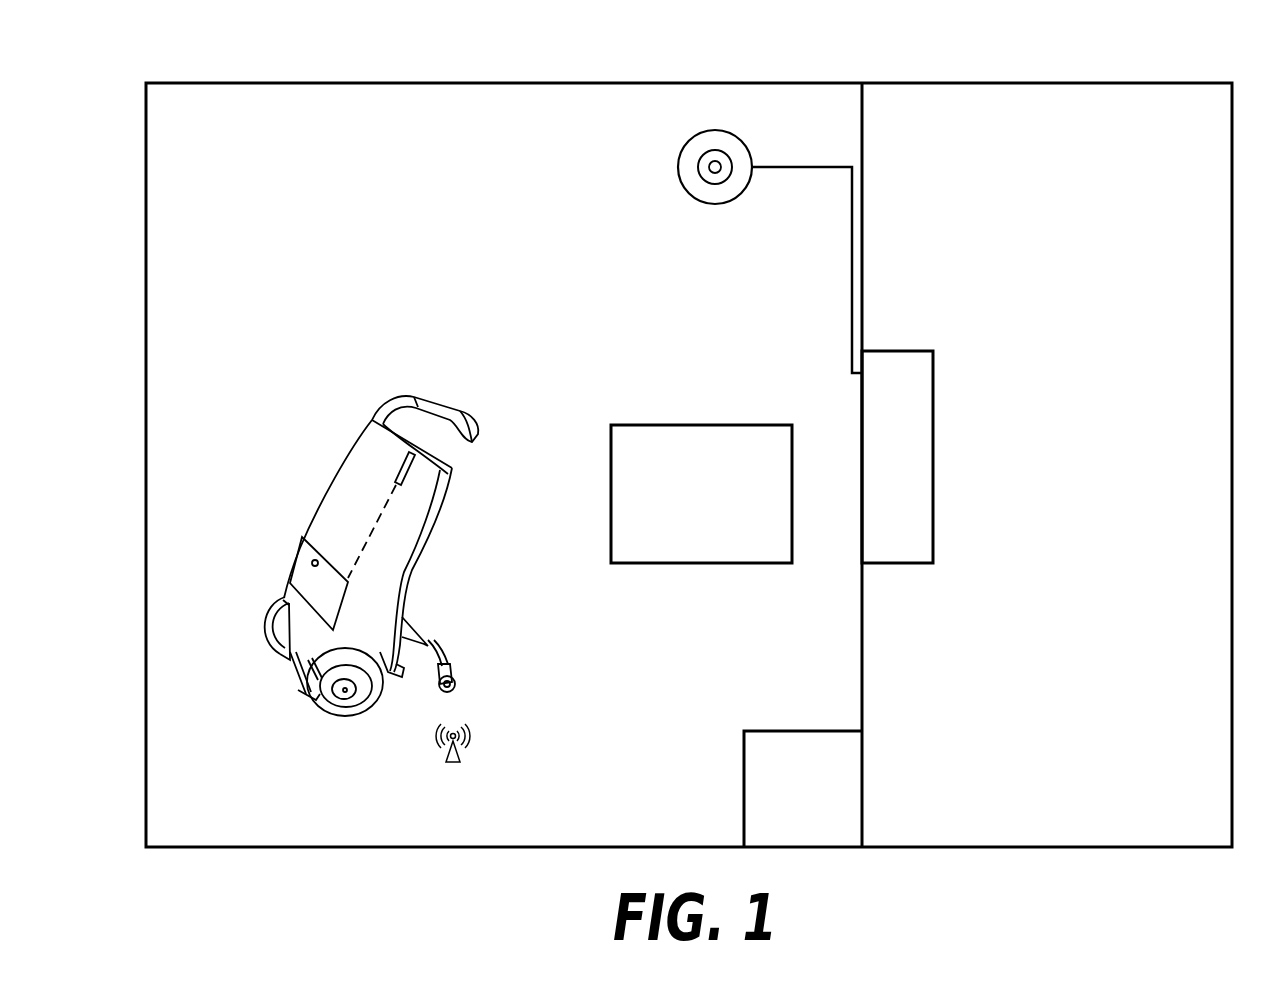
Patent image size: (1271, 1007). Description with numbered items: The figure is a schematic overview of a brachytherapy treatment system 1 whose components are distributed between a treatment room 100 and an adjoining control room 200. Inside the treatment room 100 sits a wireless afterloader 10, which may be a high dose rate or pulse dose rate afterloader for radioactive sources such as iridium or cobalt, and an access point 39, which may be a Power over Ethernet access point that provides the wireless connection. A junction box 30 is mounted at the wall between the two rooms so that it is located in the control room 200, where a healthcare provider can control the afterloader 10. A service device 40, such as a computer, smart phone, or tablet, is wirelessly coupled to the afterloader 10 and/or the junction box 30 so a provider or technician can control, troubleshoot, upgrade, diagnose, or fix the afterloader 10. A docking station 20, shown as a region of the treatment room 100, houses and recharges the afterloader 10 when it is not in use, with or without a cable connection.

The brachytherapy treatment system 1 is at (131, 64).
The treatment room 100 is at (509, 182).
The control room 200 is at (1056, 182).
The wireless afterloader 10 is at (318, 490).
The docking station 20 is at (744, 774).
The junction box 30 is at (934, 455).
The access point 39 is at (716, 205).
The service device 40 is at (715, 565).